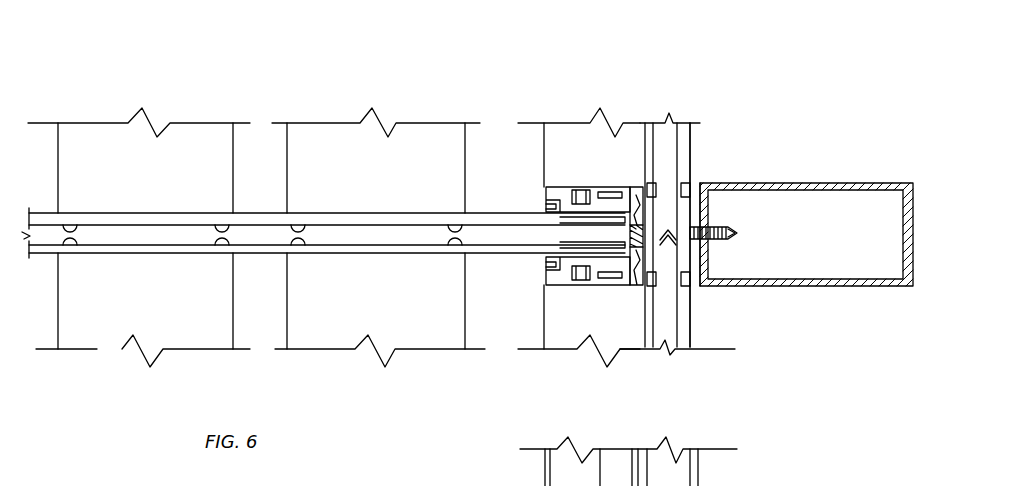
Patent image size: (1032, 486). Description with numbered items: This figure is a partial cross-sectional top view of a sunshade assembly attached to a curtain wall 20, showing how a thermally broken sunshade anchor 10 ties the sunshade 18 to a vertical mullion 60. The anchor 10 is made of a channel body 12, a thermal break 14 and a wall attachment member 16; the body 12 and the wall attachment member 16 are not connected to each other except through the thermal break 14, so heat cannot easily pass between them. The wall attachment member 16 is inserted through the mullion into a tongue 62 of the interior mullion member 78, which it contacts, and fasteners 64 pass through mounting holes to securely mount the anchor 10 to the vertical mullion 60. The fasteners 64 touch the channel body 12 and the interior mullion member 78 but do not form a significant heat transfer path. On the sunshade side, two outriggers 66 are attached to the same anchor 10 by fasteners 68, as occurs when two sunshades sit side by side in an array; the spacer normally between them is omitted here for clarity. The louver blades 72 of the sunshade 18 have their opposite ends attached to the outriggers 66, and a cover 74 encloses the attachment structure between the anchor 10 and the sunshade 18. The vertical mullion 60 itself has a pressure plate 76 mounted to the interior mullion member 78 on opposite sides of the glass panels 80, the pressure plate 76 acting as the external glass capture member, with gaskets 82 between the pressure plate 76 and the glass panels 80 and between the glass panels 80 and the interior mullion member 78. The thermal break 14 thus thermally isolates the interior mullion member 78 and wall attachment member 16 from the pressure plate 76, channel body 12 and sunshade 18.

The thermally broken sunshade anchor 10 is at (545, 265).
The channel body 12 is at (545, 207).
The thermal break 14 is at (653, 212).
The wall attachment member 16 is at (650, 246).
The sunshade 18 is at (146, 47).
The curtain wall 20 is at (816, 345).
The vertical mullion 60 is at (856, 305).
The tongue 62 is at (702, 216).
The fasteners 64 is at (738, 238).
The outrigger 66 is at (262, 200).
The fasteners 68 is at (580, 188).
The louver blades 72 is at (106, 136).
The cover 74 is at (547, 186).
The pressure plate 76 is at (613, 190).
The interior mullion member 78 is at (868, 183).
The glass panels 80 is at (700, 124).
The gaskets 82 is at (642, 126).